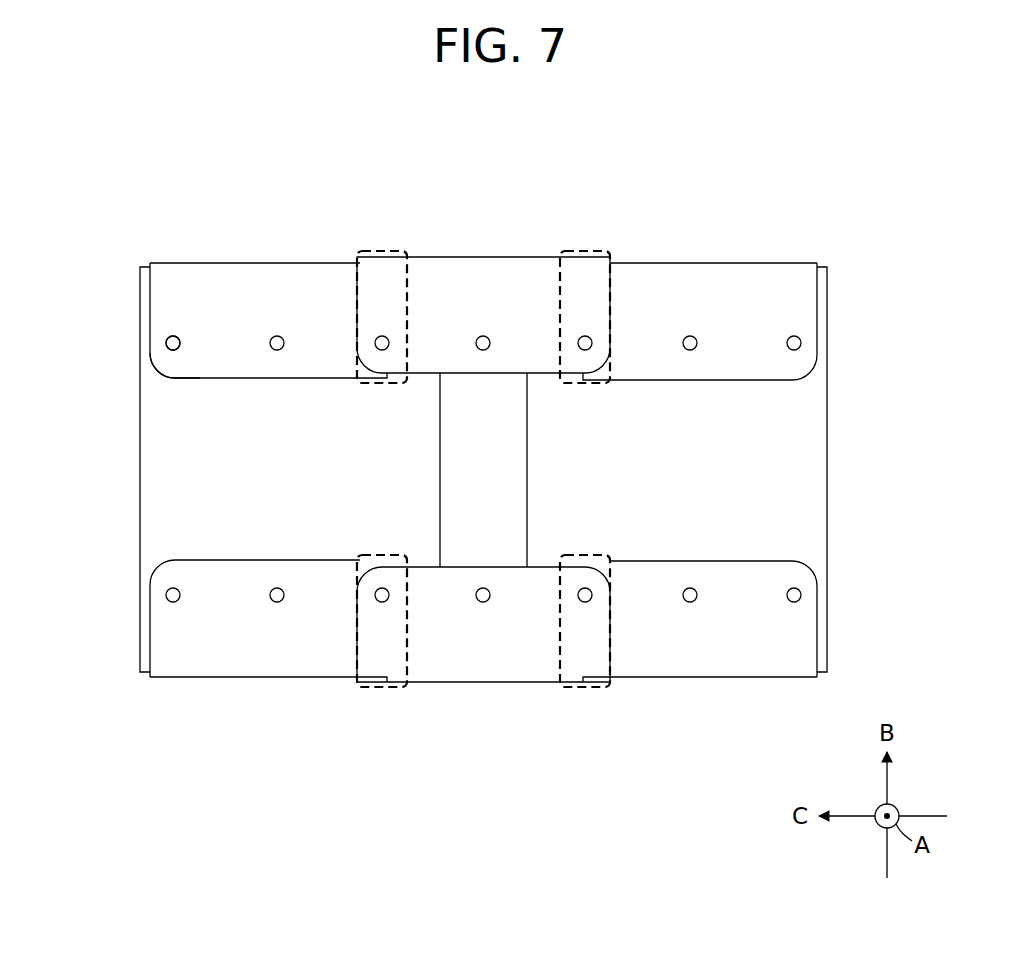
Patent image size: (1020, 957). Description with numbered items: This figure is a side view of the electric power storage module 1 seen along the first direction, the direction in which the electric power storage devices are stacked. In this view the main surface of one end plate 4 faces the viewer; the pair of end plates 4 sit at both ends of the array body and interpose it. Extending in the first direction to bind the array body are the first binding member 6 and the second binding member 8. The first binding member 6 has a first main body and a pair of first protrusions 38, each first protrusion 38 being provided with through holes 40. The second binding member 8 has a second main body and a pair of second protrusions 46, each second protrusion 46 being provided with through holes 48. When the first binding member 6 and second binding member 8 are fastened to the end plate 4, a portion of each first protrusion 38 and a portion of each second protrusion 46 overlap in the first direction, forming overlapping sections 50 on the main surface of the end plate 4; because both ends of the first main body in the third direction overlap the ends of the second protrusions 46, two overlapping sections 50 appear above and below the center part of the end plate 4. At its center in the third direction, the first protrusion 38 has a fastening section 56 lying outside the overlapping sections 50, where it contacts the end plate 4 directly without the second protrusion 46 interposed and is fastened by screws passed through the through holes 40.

The electric power storage module 1 is at (471, 826).
The end plate 4 is at (138, 482).
The first binding member 6 is at (514, 255).
The second binding member 8 is at (193, 261).
The first protrusion 38 is at (540, 375).
The through hole 40 is at (481, 336).
The second protrusion 46 is at (200, 379).
The through hole 48 is at (173, 335).
The overlapping section 50 is at (381, 249).
The fastening section 56 is at (430, 297).